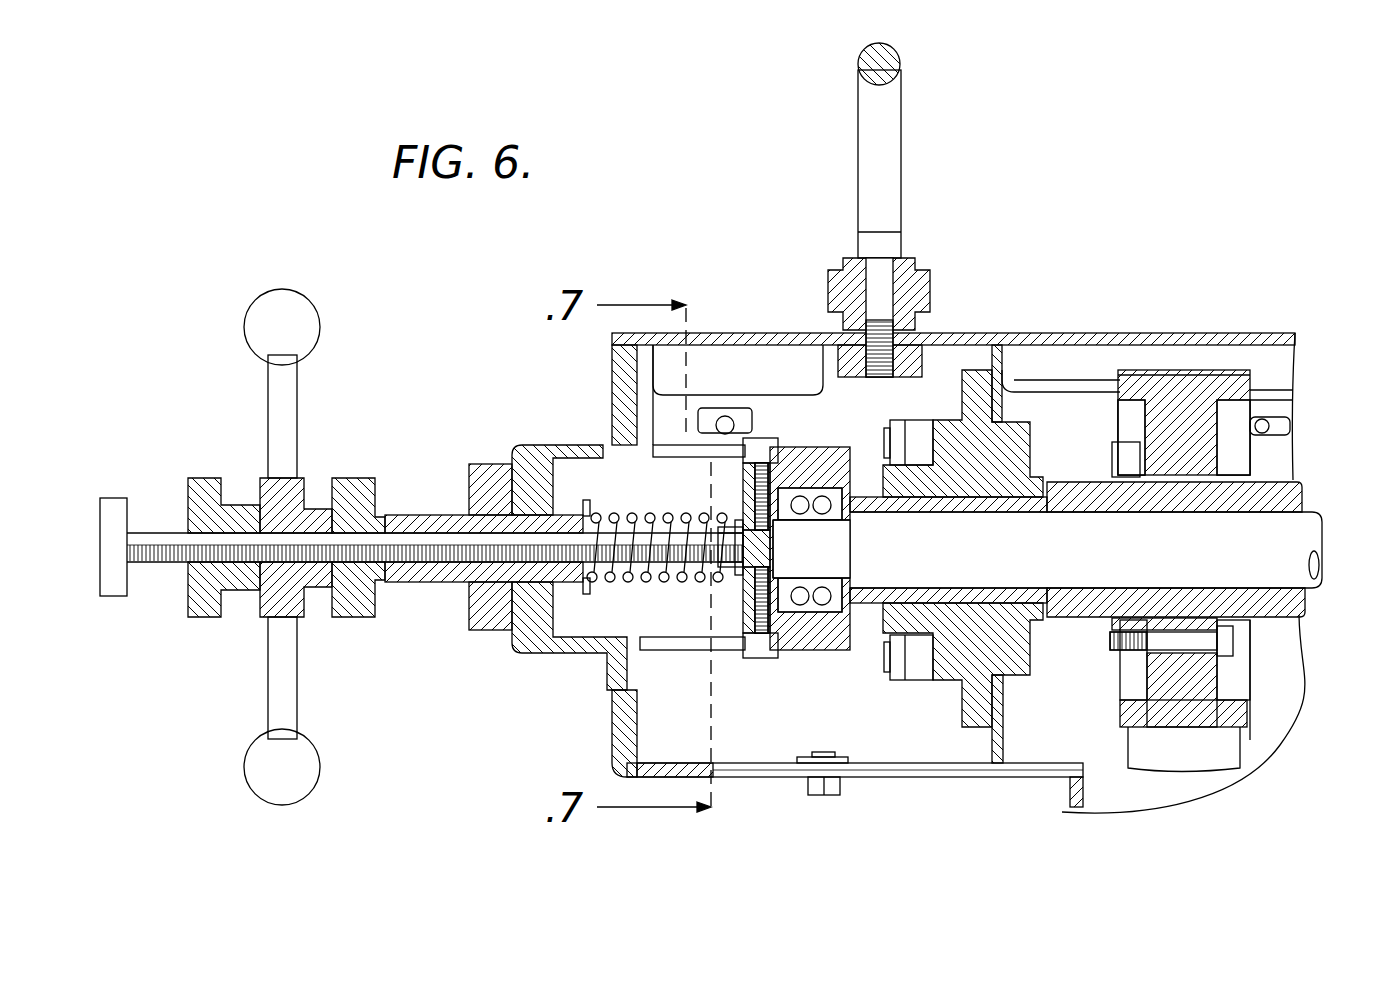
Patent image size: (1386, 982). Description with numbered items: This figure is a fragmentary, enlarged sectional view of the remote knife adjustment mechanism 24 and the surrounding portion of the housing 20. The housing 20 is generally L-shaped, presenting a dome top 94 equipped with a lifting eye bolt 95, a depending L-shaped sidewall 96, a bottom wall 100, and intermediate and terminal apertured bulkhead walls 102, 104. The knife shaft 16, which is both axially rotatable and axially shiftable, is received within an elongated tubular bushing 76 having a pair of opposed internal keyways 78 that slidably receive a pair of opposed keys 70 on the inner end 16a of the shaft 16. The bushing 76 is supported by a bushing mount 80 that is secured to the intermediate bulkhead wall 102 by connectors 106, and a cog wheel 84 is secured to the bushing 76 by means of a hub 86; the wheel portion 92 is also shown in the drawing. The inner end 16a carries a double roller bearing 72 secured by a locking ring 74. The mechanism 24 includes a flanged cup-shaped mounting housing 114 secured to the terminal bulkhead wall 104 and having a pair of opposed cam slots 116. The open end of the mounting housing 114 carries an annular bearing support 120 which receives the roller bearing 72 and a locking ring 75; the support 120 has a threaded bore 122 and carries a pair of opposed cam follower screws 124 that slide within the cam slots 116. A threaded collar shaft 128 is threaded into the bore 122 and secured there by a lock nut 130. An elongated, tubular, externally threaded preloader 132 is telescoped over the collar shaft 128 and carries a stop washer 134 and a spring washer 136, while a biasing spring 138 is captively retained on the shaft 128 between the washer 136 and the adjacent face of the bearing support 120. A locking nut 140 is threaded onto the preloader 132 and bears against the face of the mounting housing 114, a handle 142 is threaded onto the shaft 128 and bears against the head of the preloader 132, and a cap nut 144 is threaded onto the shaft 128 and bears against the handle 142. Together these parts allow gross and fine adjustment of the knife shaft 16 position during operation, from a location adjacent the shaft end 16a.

The shaft 16 is at (1330, 580).
The inner end of shaft 16a is at (812, 560).
The housing 20 is at (1117, 325).
The knife adjustment mechanism 24 is at (470, 355).
The keys 70 is at (1003, 588).
The double roller bearing 72 is at (810, 630).
The locking ring 74 is at (790, 538).
The locking ring 75 is at (840, 498).
The tubular bushing 76 is at (1298, 498).
The internal keyways 78 is at (918, 560).
The bushing mount 80 is at (1012, 440).
The cog wheel 84 is at (1200, 680).
The hub 86 is at (1115, 642).
The wheel 92 is at (1190, 370).
The dome top 94 is at (738, 330).
The lifting eye bolt 95 is at (893, 143).
The sidewall 96 is at (1272, 770).
The bottom wall 100 is at (1030, 790).
The intermediate bulkhead wall 102 is at (1003, 737).
The terminal bulkhead wall 104 is at (630, 742).
The connectors 106 is at (913, 672).
The mounting housing 114 is at (560, 648).
The cam slots 116 is at (690, 455).
The bearing support 120 is at (843, 600).
The threaded bore 122 is at (737, 530).
The cam follower screws 124 is at (760, 445).
The threaded collar shaft 128 is at (165, 530).
The lock nut 130 is at (730, 565).
The preloader 132 is at (418, 512).
The stop washer 134 is at (580, 495).
The spring washer 136 is at (594, 507).
The biasing spring 138 is at (654, 549).
The locking nut 140 is at (485, 612).
The handle 142 is at (290, 700).
The cap nut 144 is at (205, 610).